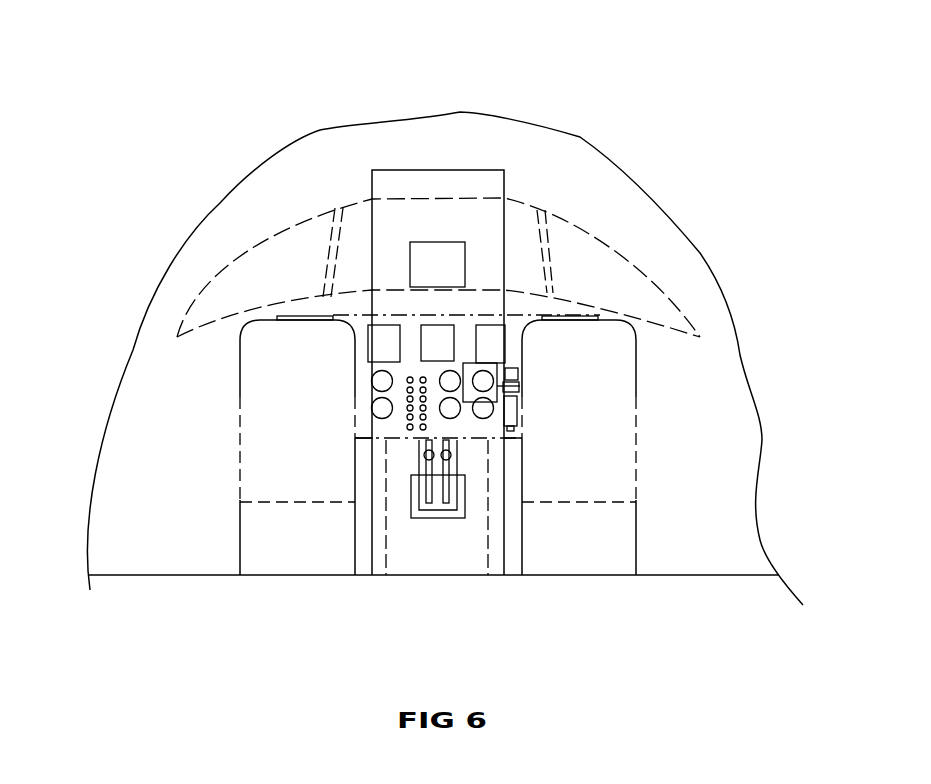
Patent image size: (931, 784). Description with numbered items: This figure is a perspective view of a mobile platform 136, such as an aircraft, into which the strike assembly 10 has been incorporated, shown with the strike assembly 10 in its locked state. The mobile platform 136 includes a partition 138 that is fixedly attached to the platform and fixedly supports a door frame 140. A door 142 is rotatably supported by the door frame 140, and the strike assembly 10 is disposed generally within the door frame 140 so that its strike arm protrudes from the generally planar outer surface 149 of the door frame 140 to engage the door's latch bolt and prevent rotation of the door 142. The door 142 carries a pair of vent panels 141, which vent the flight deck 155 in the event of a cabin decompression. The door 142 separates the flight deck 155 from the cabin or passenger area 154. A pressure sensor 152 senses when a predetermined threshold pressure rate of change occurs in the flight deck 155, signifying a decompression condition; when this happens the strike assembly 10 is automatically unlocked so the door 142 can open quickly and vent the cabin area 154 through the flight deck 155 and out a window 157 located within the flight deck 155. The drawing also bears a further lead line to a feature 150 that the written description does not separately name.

The strike assembly 10 is at (555, 398).
The mobile platform 136 is at (165, 83).
The partition 138 is at (724, 452).
The door frame 140 is at (350, 176).
The vent panels 141 is at (465, 262).
The door 142 is at (413, 180).
The outer surface of the door frame 149 is at (504, 218).
The windshield post 150 is at (470, 183).
The pressure sensor 152 is at (438, 413).
The cabin 154 is at (132, 467).
The flight deck 155 is at (447, 196).
The window 157 is at (657, 300).